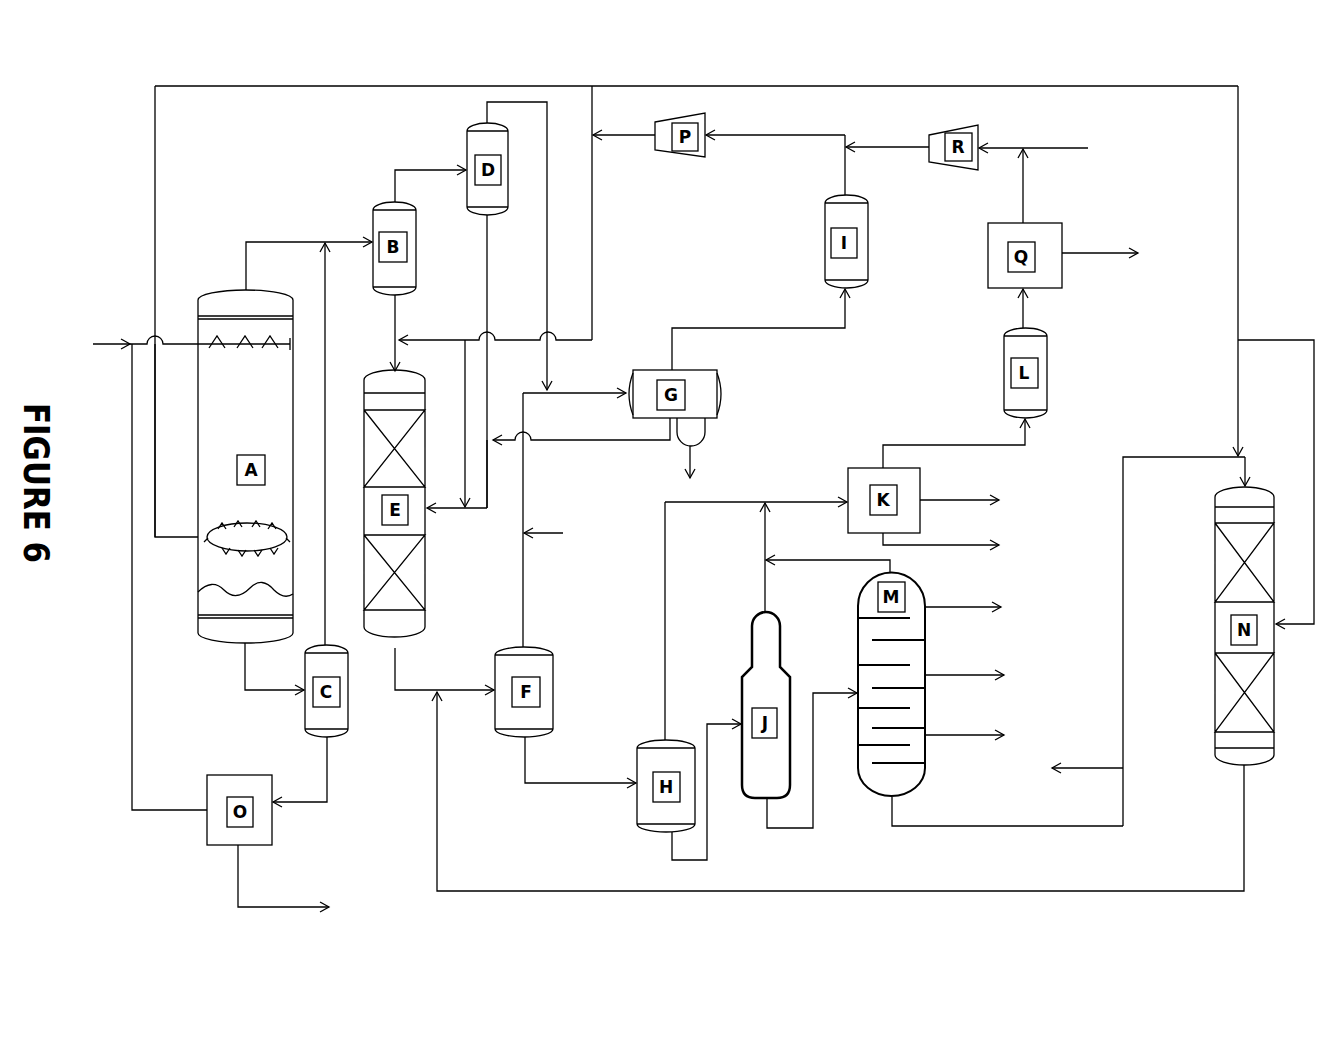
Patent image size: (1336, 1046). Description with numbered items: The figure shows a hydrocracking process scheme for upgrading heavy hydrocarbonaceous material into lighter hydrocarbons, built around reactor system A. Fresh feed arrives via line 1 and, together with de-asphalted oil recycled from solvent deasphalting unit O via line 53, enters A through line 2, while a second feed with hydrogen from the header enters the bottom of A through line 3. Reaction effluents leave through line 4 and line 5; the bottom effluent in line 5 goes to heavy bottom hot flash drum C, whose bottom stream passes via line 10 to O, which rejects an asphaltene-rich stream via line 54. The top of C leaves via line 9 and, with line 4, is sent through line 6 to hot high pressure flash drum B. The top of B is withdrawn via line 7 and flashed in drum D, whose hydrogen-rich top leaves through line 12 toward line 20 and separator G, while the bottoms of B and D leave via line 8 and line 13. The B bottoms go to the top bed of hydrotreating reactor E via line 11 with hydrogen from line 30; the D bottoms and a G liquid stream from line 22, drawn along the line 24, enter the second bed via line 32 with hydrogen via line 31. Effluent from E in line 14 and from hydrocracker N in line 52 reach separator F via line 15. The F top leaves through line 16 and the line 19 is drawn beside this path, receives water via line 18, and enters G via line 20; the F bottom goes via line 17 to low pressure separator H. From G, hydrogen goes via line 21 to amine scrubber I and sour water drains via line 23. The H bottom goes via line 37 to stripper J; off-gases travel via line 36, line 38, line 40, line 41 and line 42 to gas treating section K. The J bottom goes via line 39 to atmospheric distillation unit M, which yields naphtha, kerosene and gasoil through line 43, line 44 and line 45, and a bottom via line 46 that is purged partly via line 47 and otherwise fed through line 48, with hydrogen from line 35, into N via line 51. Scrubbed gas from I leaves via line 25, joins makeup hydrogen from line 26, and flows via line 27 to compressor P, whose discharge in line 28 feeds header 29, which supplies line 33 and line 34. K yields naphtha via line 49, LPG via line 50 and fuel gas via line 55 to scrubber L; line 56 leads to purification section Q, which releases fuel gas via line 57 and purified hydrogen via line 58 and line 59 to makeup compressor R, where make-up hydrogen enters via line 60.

The line 1 is at (117, 346).
The line 2 is at (229, 363).
The line 3 is at (176, 440).
The line 4 is at (269, 266).
The line 5 is at (258, 666).
The line 6 is at (348, 225).
The line 7 is at (430, 171).
The line 8 is at (371, 317).
The line 9 is at (309, 444).
The line 10 is at (322, 769).
The line 11 is at (371, 354).
The line 12 is at (517, 246).
The line 13 is at (465, 361).
The line 14 is at (405, 686).
The line 15 is at (465, 673).
The line 16 is at (500, 590).
The line 17 is at (557, 760).
The line 18 is at (564, 534).
The stream from G 19 is at (546, 463).
The line 20 is at (574, 375).
The line 21 is at (751, 329).
The line 22 is at (581, 445).
The line 23 is at (713, 463).
The stream to E 24 is at (502, 474).
The line 25 is at (869, 165).
The line 26 is at (887, 130).
The line 27 is at (775, 151).
The line 28 is at (624, 120).
The header 29 is at (614, 213).
The line 30 is at (495, 322).
The line 31 is at (448, 423).
The line 32 is at (457, 525).
The line 33 is at (1215, 213).
The line 34 is at (1268, 382).
The line 35 is at (1249, 482).
The line 36 is at (641, 621).
The line 37 is at (684, 796).
The line 38 is at (743, 586).
The line 39 is at (812, 742).
The line 40 is at (828, 550).
The line 41 is at (742, 531).
The line 42 is at (756, 485).
The line 43 is at (986, 606).
The line 44 is at (988, 674).
The line 45 is at (986, 734).
The line 46 is at (1007, 810).
The line 47 is at (1066, 767).
The line 48 is at (1161, 641).
The line 49 is at (962, 546).
The line 50 is at (982, 501).
The line 51 is at (1271, 470).
The line 52 is at (840, 791).
The line 53 is at (169, 577).
The line 54 is at (283, 876).
The line 55 is at (954, 440).
The line 56 is at (1051, 308).
The line 57 is at (1123, 255).
The line 58 is at (1045, 186).
The line 59 is at (1002, 130).
The line 60 is at (1076, 146).